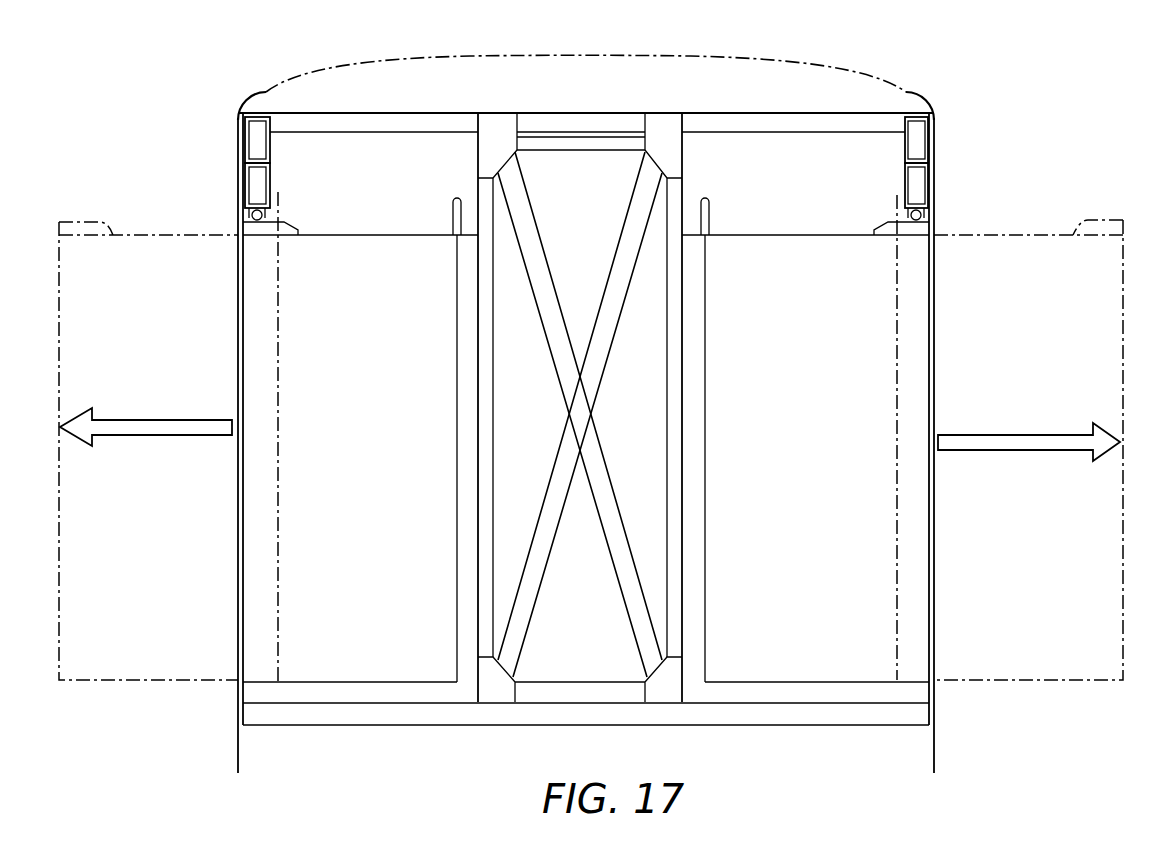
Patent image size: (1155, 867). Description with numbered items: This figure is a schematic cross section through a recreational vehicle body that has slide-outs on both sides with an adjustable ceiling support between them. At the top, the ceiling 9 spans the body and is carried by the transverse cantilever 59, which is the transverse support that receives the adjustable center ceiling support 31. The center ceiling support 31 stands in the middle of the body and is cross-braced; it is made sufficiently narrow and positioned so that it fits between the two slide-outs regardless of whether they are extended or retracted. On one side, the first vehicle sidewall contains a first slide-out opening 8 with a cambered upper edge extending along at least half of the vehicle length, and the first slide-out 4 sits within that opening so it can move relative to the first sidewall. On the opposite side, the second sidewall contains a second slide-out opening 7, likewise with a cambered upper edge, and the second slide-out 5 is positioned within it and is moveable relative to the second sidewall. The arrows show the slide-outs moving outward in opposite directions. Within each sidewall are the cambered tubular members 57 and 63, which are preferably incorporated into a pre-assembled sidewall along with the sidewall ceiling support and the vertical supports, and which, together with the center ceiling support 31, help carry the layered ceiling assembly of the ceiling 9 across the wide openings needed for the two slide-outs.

The first slide-out 4 is at (238, 627).
The second slide-out 5 is at (932, 643).
The second slide-out opening 7 is at (934, 230).
The first slide-out opening 8 is at (240, 231).
The ceiling 9 is at (900, 78).
The adjustable center ceiling support 31 is at (683, 405).
The cambered tubular member 57 is at (245, 178).
The transverse cantilever 59 is at (352, 113).
The cambered tubular member 63 is at (245, 137).